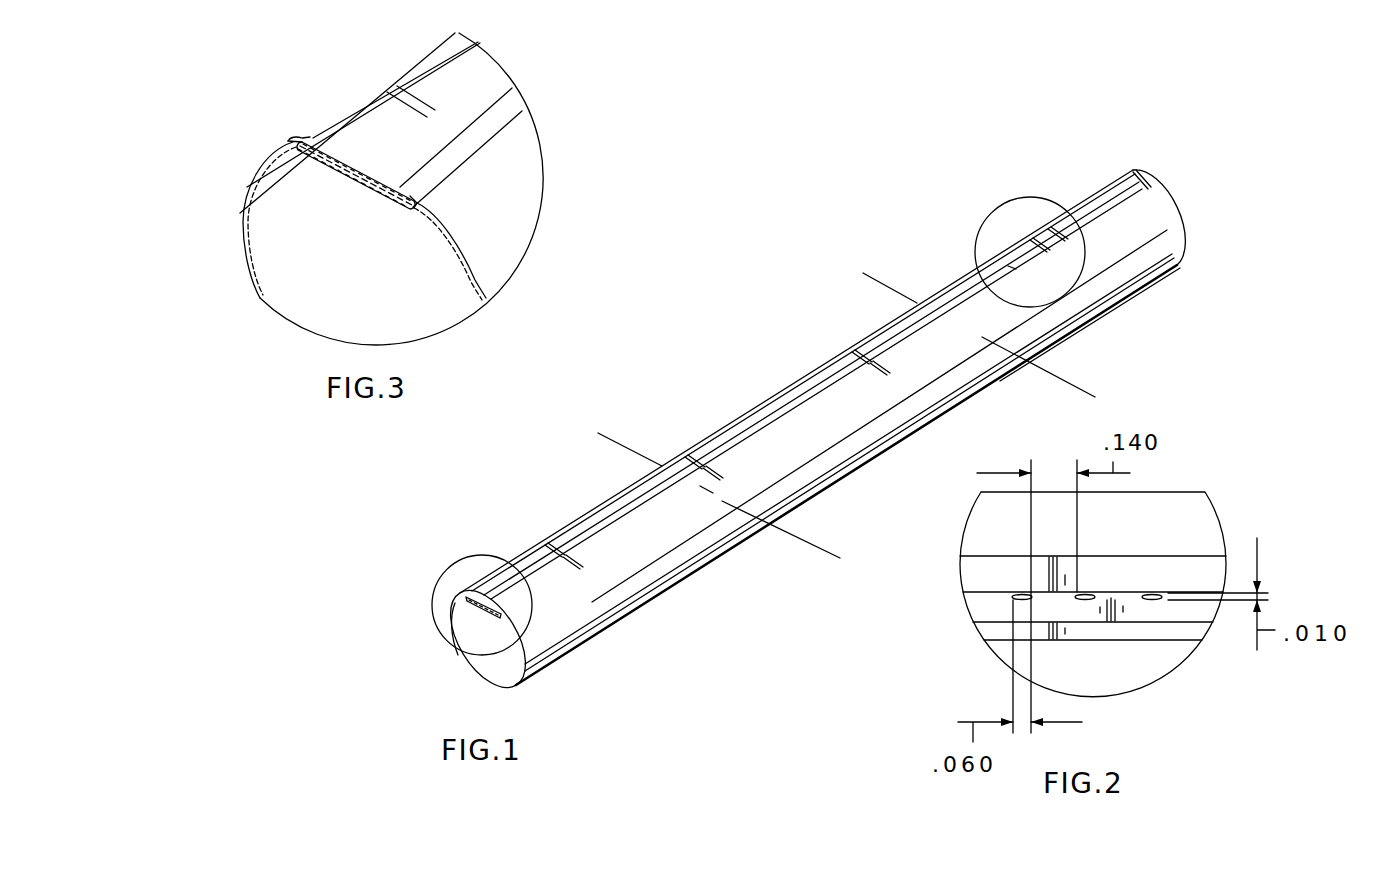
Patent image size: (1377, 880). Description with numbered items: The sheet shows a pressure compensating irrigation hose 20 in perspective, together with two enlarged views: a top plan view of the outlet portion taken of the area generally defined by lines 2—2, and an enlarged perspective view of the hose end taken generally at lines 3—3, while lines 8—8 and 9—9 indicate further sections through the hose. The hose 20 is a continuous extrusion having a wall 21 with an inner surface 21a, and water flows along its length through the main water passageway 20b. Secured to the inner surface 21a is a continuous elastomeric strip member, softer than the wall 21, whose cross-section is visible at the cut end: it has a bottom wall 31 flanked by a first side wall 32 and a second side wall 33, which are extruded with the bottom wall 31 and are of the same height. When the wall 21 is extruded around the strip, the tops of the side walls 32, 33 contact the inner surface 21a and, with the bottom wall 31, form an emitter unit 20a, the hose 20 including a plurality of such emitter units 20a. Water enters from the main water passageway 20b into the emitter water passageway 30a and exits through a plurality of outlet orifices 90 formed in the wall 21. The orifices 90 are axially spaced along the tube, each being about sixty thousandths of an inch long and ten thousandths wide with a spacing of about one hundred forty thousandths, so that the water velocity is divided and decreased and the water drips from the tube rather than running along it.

In FIG. 1, the pressure compensating irrigation hose 20 is at (1137, 304).
In FIG. 1, the emitter unit 20a is at (668, 583).
In FIG. 1, the main water passageway 20b is at (470, 660).
In FIG. 1, the wall 21 is at (554, 661).
In FIG. 1, the inner surface 21a is at (484, 664).
In FIG. 2, the emitter water passageway 30a is at (1093, 598).
In FIG. 3, the emitter water passageway 30a is at (352, 155).
In FIG. 3, the bottom wall 31 is at (345, 183).
In FIG. 3, the first side wall 32 is at (300, 148).
In FIG. 3, the second side wall 33 is at (417, 203).
In FIG. 1, the outlet orifices 90 is at (1055, 236).
In FIG. 2, the outlet orifices 90 is at (1022, 594).
In FIG. 1, the detail circle 2 is at (975, 250).
In FIG. 1, the detail circle 3 is at (432, 604).
In FIG. 1, the section line 8- 8 is at (902, 263).
In FIG. 1, the section line 9- 9 is at (576, 466).